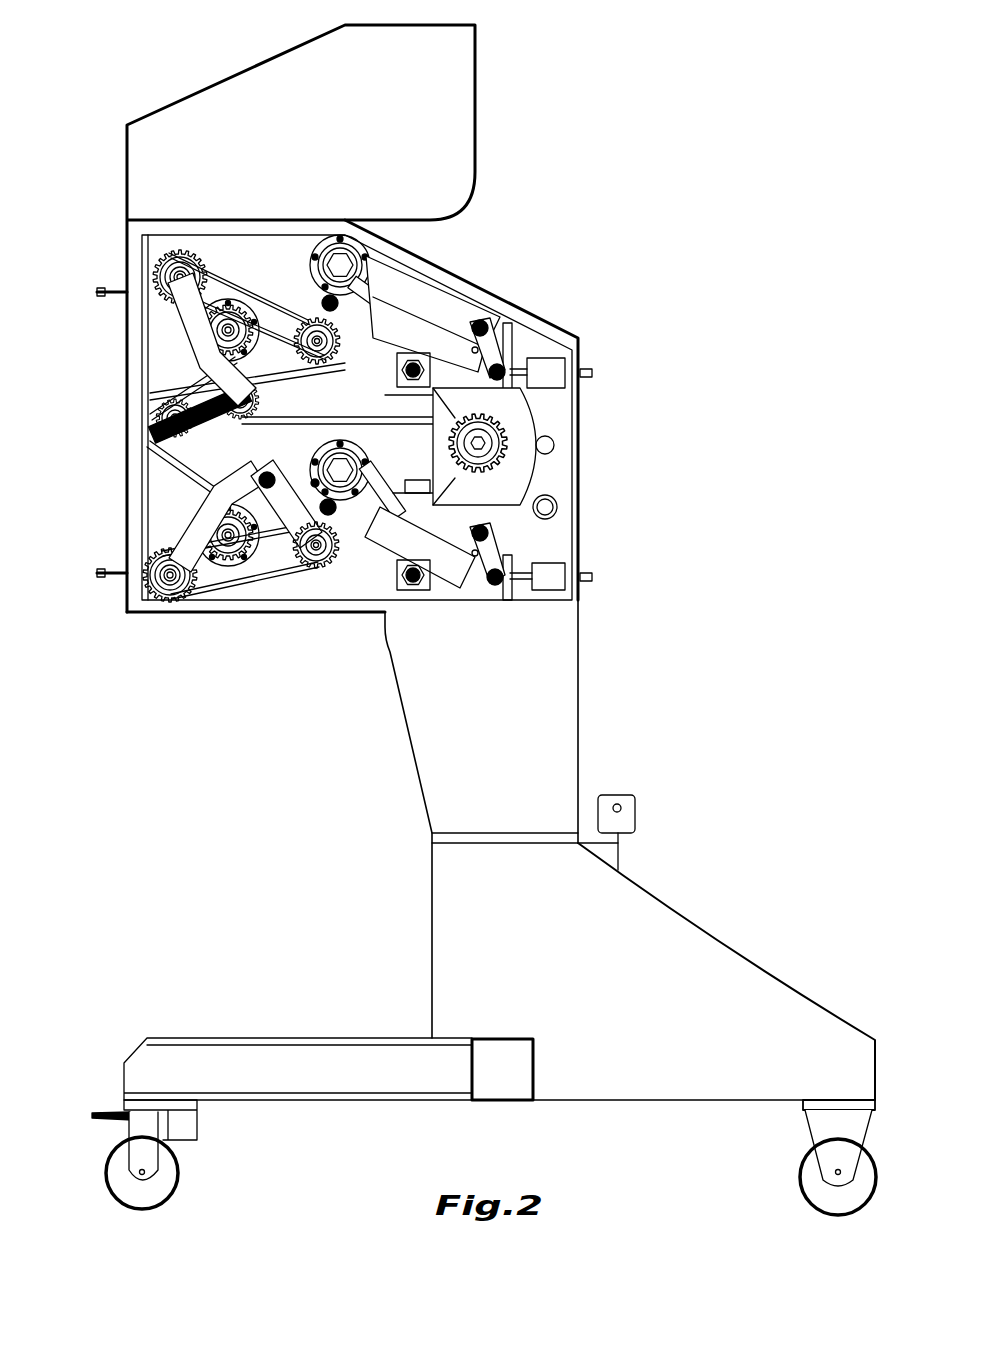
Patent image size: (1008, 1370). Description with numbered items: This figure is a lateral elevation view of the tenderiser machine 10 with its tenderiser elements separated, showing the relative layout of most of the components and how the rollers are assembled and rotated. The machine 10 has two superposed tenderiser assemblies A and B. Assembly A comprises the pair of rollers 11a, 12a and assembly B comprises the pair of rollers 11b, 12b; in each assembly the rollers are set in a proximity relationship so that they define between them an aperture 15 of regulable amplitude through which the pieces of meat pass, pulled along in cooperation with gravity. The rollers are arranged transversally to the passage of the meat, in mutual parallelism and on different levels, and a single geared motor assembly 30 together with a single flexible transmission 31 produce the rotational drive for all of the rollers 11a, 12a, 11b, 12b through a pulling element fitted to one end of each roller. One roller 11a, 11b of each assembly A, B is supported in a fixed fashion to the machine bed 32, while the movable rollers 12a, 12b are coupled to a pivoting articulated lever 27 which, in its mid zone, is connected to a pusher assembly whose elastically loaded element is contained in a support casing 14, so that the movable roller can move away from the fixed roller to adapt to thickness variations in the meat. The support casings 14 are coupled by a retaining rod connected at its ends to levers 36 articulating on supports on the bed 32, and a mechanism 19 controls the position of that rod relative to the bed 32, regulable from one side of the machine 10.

The machine 10 is at (613, 154).
The roller 11a is at (205, 325).
The roller 11b is at (210, 590).
The movable roller 12a is at (440, 345).
The movable roller 12b is at (325, 565).
The support casing 14 is at (443, 340).
The aperture 15 is at (270, 328).
The mechanism 19 is at (552, 367).
The pivoting articulated lever 27 is at (312, 300).
The geared motor assembly 30 is at (540, 425).
The flexible transmission 31 is at (210, 467).
The machine bed 32 is at (132, 472).
The lever 36 is at (513, 332).
The tenderiser assembly A is at (279, 272).
The tenderiser assembly B is at (274, 568).